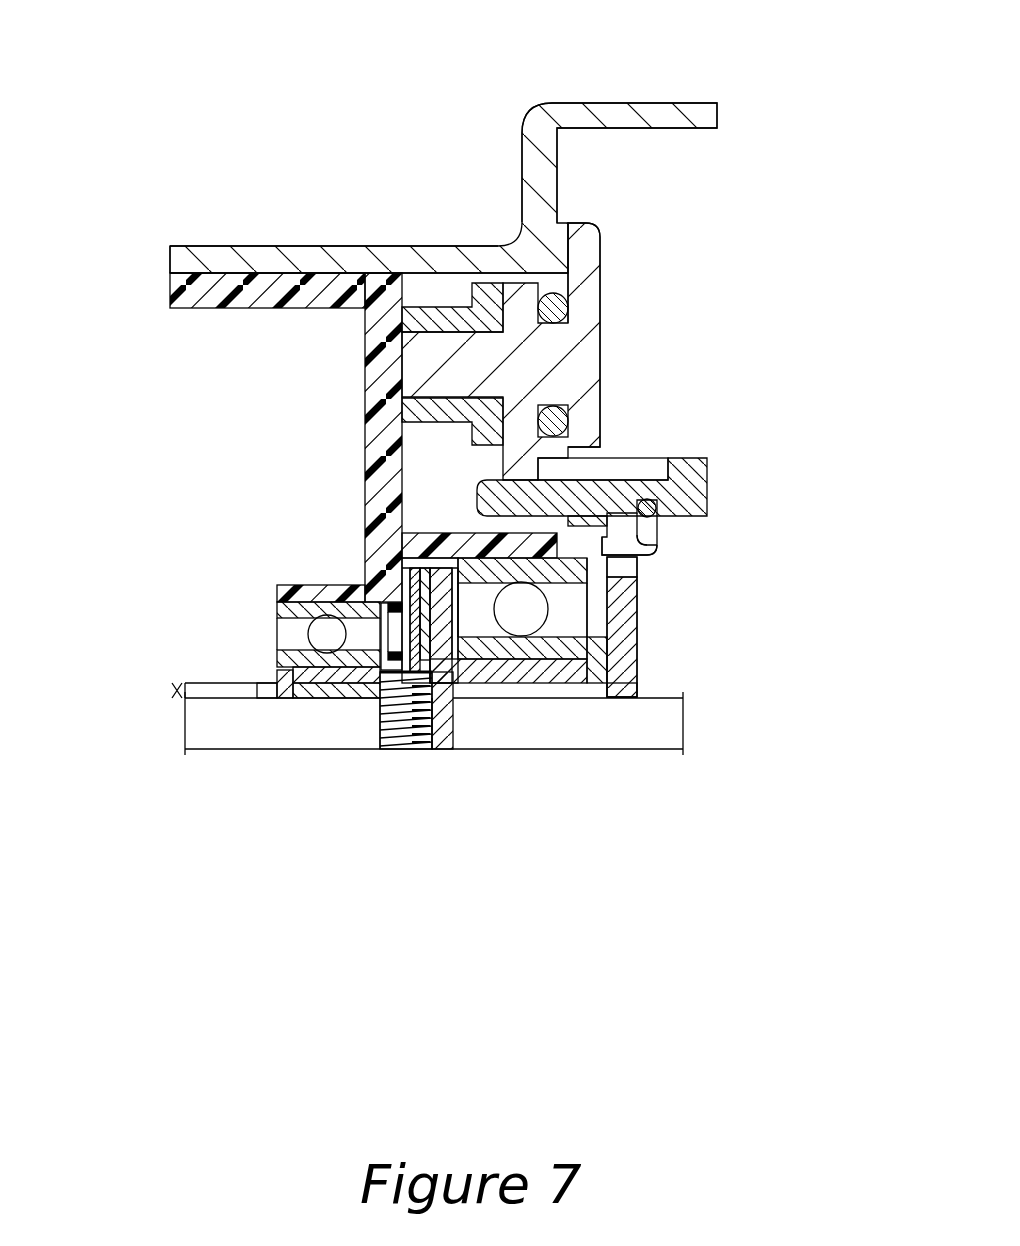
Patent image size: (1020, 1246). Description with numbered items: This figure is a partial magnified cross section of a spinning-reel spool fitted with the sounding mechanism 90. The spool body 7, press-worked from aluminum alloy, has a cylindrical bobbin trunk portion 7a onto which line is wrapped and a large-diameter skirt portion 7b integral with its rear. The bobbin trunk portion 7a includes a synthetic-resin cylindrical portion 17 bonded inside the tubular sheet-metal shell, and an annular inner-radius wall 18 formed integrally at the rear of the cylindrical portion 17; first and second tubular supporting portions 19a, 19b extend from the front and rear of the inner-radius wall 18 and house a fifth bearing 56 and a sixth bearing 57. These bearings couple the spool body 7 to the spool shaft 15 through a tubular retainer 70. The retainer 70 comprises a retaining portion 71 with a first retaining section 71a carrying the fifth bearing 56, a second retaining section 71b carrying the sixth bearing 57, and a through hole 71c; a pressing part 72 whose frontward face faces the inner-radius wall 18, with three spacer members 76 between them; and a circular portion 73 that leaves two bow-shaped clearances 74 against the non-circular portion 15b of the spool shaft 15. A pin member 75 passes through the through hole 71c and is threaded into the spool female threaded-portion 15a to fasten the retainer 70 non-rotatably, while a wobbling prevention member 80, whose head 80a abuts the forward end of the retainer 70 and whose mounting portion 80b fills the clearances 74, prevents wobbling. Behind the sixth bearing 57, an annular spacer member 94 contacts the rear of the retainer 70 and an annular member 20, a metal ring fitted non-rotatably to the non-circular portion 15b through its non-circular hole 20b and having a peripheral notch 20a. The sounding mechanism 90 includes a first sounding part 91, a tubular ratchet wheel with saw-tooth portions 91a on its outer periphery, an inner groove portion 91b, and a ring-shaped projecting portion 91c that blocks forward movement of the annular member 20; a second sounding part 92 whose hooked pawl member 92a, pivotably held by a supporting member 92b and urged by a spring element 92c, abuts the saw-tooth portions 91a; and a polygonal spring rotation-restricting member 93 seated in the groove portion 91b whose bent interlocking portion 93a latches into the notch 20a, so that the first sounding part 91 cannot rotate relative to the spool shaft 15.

The spool body 7 is at (443, 136).
The bobbin trunk portion 7a is at (394, 240).
The skirt portion 7b is at (642, 102).
The spool shaft 15 is at (385, 753).
The spool female threaded-portion 15a is at (395, 745).
The non-circular portion 15b is at (262, 692).
The cylindrical portion 17 is at (247, 310).
The inner-radius wall 18 is at (375, 407).
The first tubular supporting portion 19a is at (300, 585).
The second tubular supporting portion 19b is at (420, 530).
The annular member 20 is at (692, 638).
The notch 20a is at (639, 562).
The non-circular hole 20b is at (640, 686).
The fifth bearing 56 is at (280, 601).
The sixth bearing 57 is at (520, 600).
The retainer 70 is at (447, 750).
The retaining portion 71 is at (447, 724).
The first retaining section 71a is at (345, 684).
The second retaining section 71b is at (562, 684).
The through hole 71c is at (426, 705).
The pressing part 72 is at (449, 702).
The circular portion 73 is at (285, 699).
The clearances 74 is at (262, 689).
The pin member 75 is at (402, 753).
The spacer members 76 is at (384, 603).
The wobbling prevention member 80 is at (241, 709).
The head 80a is at (277, 660).
The mounting portion 80b is at (290, 699).
The sounding mechanism 90 is at (638, 414).
The first sounding part 91 is at (673, 508).
The saw-tooth portions 91a is at (592, 466).
The groove portion 91b is at (698, 483).
The projecting portion 91c is at (587, 527).
The second sounding part 92 is at (586, 340).
The hooked pawl member 92a is at (600, 410).
The supporting member 92b is at (603, 318).
The spring element 92c is at (578, 280).
The rotation-restricting member 93 is at (734, 534).
The interlocking portion 93a is at (658, 550).
The annular spacer member 94 is at (598, 636).